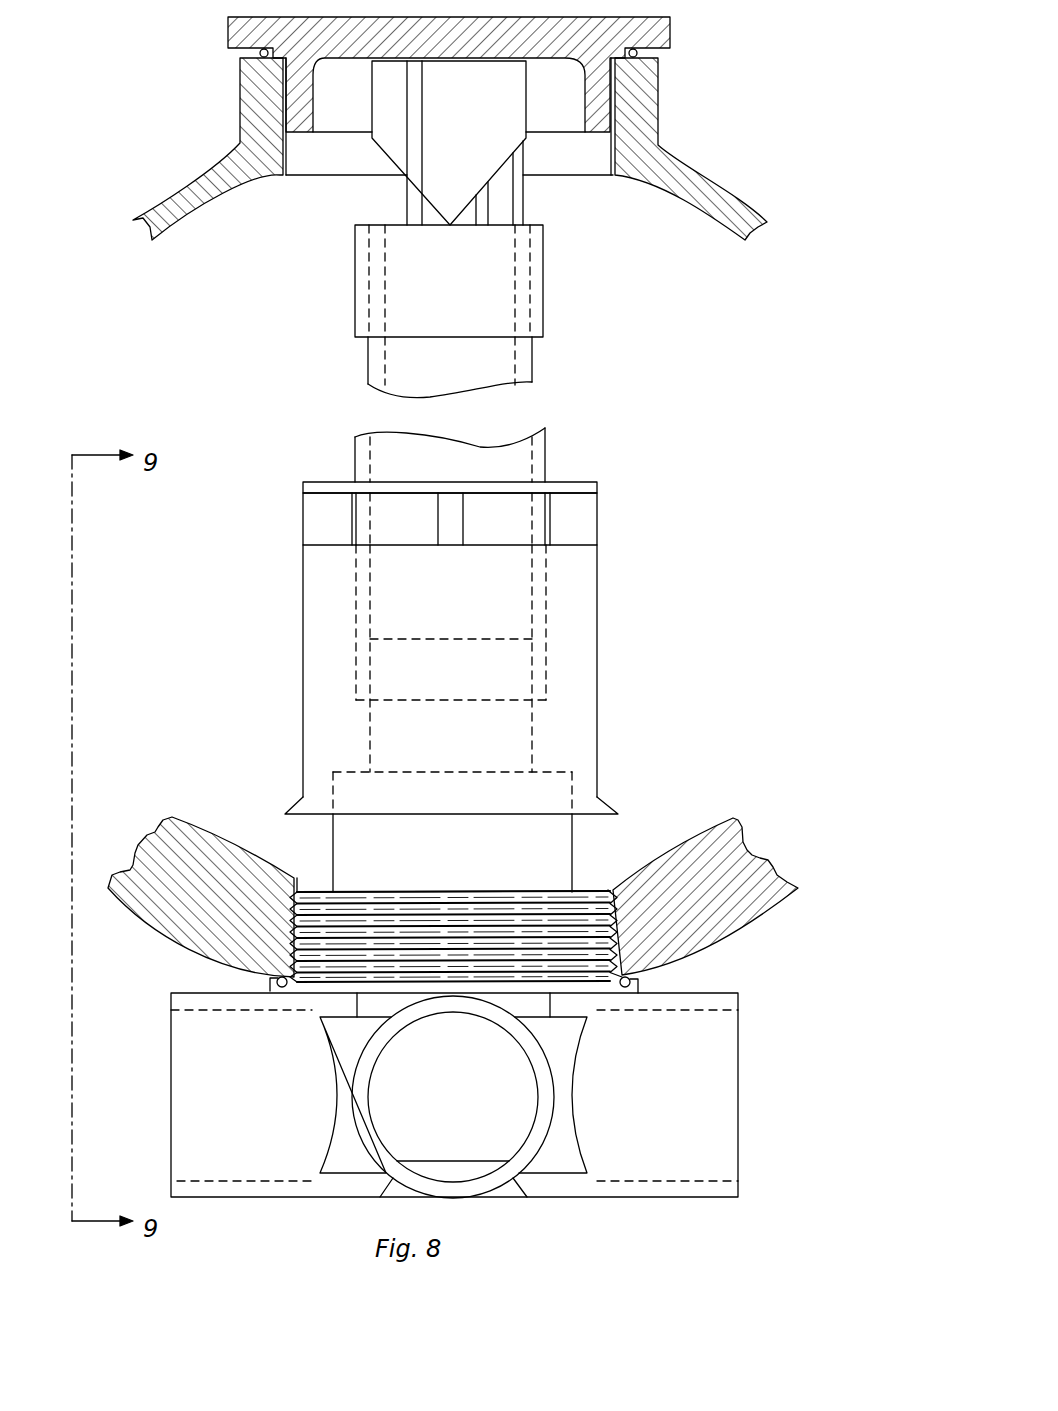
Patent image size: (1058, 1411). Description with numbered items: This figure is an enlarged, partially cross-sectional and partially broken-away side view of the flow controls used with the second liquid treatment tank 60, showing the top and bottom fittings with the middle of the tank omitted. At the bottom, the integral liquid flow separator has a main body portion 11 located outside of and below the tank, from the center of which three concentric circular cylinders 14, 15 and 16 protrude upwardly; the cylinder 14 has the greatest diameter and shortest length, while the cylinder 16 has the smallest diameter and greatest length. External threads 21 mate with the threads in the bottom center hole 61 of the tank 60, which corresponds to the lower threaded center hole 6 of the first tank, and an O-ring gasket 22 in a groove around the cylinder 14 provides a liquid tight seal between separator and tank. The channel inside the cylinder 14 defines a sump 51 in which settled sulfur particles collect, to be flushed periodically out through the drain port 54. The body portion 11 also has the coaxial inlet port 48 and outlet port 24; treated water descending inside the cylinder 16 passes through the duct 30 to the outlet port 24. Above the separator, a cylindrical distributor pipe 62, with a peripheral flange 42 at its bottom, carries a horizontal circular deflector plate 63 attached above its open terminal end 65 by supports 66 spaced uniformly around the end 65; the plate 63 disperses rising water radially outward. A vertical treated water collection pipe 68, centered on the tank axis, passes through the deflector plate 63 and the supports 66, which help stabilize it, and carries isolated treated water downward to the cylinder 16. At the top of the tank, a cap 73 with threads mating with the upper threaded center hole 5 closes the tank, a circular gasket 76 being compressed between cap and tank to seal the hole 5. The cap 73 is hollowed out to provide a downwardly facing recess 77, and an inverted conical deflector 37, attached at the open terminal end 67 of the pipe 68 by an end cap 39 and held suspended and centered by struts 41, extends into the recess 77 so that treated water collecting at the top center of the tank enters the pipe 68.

The upper threaded center hole 5 is at (288, 163).
The lower threaded center hole 6 is at (298, 883).
The main body portion 11 is at (723, 992).
The cylinder 14 is at (580, 917).
The cylinder 15 is at (556, 850).
The cylinder 16 is at (533, 745).
The external threads 21 is at (447, 922).
The O-ring gasket 22 is at (270, 987).
The outlet port 24 is at (738, 1188).
The duct 30 is at (668, 1180).
The deflector 37 is at (372, 92).
The end cap 39 is at (545, 315).
The struts 41 is at (405, 200).
The peripheral flange 42 is at (613, 812).
The inlet port 48 is at (178, 1003).
The sump 51 is at (323, 890).
The drain port 54 is at (522, 1062).
The second liquid treatment tank 60 is at (145, 870).
The bottom center hole 61 is at (617, 907).
The distributor pipe 62 is at (570, 577).
The deflector plate 63 is at (305, 482).
The open terminal end 65 is at (378, 543).
The supports 66 is at (597, 512).
The open terminal end 67 is at (378, 235).
The treated water collection pipe 68 is at (368, 360).
The cap 73 is at (673, 28).
The circular gasket 76 is at (258, 57).
The recess 77 is at (585, 103).